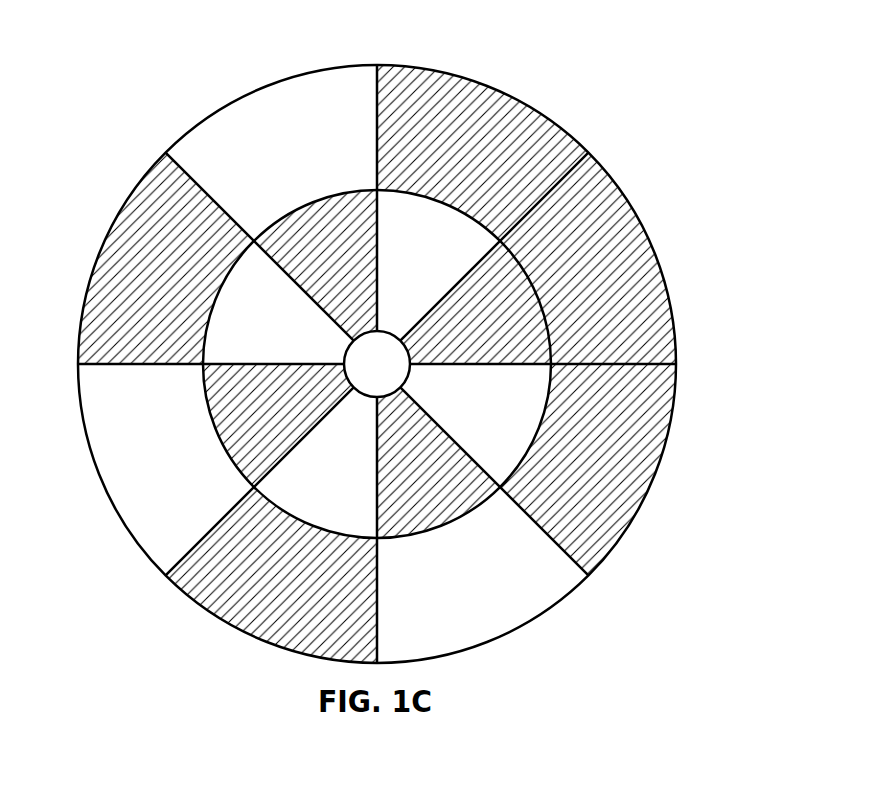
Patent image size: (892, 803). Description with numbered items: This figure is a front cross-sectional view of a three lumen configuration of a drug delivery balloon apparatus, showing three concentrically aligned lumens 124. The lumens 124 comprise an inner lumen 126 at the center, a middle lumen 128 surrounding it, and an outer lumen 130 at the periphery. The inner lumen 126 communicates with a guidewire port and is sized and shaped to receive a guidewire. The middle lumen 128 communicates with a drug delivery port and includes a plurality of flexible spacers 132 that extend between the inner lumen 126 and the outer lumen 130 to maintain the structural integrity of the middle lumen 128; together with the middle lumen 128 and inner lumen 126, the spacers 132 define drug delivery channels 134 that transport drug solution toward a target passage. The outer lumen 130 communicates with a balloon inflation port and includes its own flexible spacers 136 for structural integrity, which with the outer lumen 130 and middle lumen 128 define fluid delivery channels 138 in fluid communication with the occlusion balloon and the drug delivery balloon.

The concentrically aligned lumens 124 is at (665, 46).
The inner lumen 126 is at (375, 373).
The middle lumen 128 is at (537, 283).
The outer lumen 130 is at (252, 88).
The flexible spacers 132 is at (513, 345).
The drug delivery channels 134 is at (248, 323).
The flexible spacers 136 is at (487, 140).
The fluid delivery channels 138 is at (492, 623).